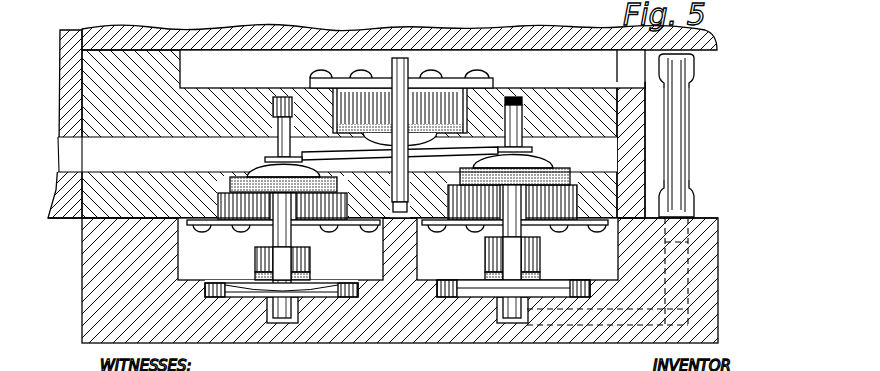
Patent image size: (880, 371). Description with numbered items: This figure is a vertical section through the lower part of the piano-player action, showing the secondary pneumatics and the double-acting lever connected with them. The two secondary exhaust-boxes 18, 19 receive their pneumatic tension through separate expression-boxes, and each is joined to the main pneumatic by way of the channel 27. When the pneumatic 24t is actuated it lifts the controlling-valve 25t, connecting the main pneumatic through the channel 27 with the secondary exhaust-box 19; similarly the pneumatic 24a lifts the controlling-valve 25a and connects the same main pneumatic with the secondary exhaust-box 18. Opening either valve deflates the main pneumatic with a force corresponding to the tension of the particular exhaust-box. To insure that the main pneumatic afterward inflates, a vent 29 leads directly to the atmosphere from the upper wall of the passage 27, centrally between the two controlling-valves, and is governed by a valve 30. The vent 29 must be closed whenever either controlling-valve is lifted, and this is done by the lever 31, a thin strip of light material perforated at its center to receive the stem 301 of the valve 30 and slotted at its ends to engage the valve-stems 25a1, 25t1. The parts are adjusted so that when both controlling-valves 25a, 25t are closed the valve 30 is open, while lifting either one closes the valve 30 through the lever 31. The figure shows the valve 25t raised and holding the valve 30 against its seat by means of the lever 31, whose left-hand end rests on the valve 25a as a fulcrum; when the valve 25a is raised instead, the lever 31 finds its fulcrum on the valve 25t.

The secondary exhaust-box 18 is at (283, 159).
The secondary exhaust-box 19 is at (515, 159).
The pneumatic 24a is at (313, 294).
The pneumatic 24t is at (473, 282).
The controlling-valve 25a is at (277, 187).
The controlling-valve 25t is at (507, 177).
The valve-stem 25a1 is at (277, 133).
The valve-stem 25t1 is at (510, 125).
The channel 27 is at (333, 154).
The vent 29 is at (423, 103).
The valve 30 is at (397, 97).
The stem 301 is at (420, 83).
The lever 31 is at (468, 152).